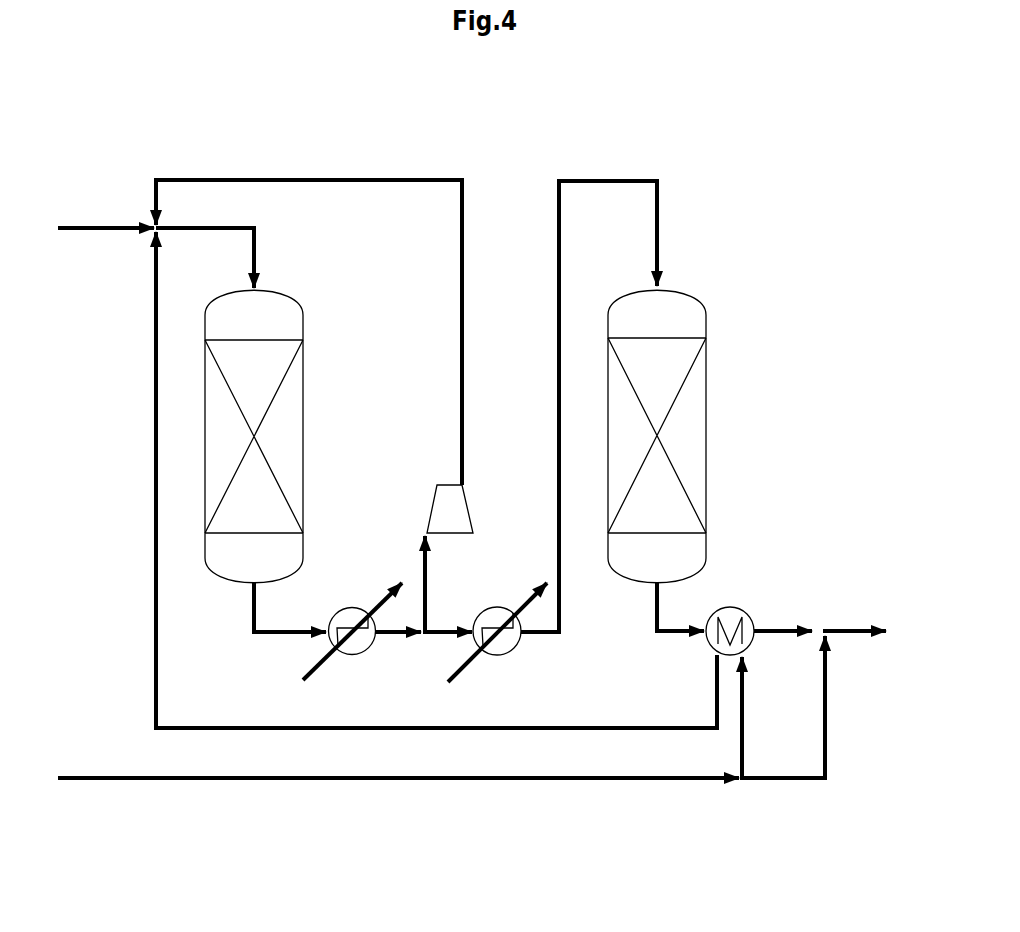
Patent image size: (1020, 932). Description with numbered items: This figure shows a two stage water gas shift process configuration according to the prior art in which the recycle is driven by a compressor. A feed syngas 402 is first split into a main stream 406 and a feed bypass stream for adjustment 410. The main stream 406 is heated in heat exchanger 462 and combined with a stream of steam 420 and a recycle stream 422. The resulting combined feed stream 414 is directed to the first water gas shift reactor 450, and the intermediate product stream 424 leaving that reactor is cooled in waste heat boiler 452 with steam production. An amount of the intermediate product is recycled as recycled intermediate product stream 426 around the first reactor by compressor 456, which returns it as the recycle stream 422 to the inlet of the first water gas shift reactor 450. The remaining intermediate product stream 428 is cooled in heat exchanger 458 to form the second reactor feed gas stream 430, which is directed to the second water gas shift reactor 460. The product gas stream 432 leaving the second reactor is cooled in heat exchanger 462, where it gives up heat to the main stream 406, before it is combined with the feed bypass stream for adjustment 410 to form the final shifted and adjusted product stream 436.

The feed syngas 402 is at (80, 778).
The main stream 406 is at (744, 706).
The feed bypass stream for adjustment 410 is at (827, 706).
The combined feed stream 414 is at (205, 228).
The steam 420 is at (83, 228).
The recycle stream 422 is at (197, 180).
The intermediate product stream 424 is at (275, 632).
The recycled intermediate product stream 426 is at (427, 584).
The remaining intermediate product stream 428 is at (433, 632).
The second reactor feed gas stream 430 is at (590, 181).
The product gas stream 432 is at (663, 631).
The shifted and adjusted product stream 436 is at (843, 631).
The first water gas shift reactor 450 is at (303, 437).
The waste heat boiler 452 is at (372, 648).
The compressor 456 is at (470, 514).
The heat exchanger 458 is at (517, 648).
The second water gas shift reactor 460 is at (706, 437).
The heat exchanger 462 is at (740, 612).